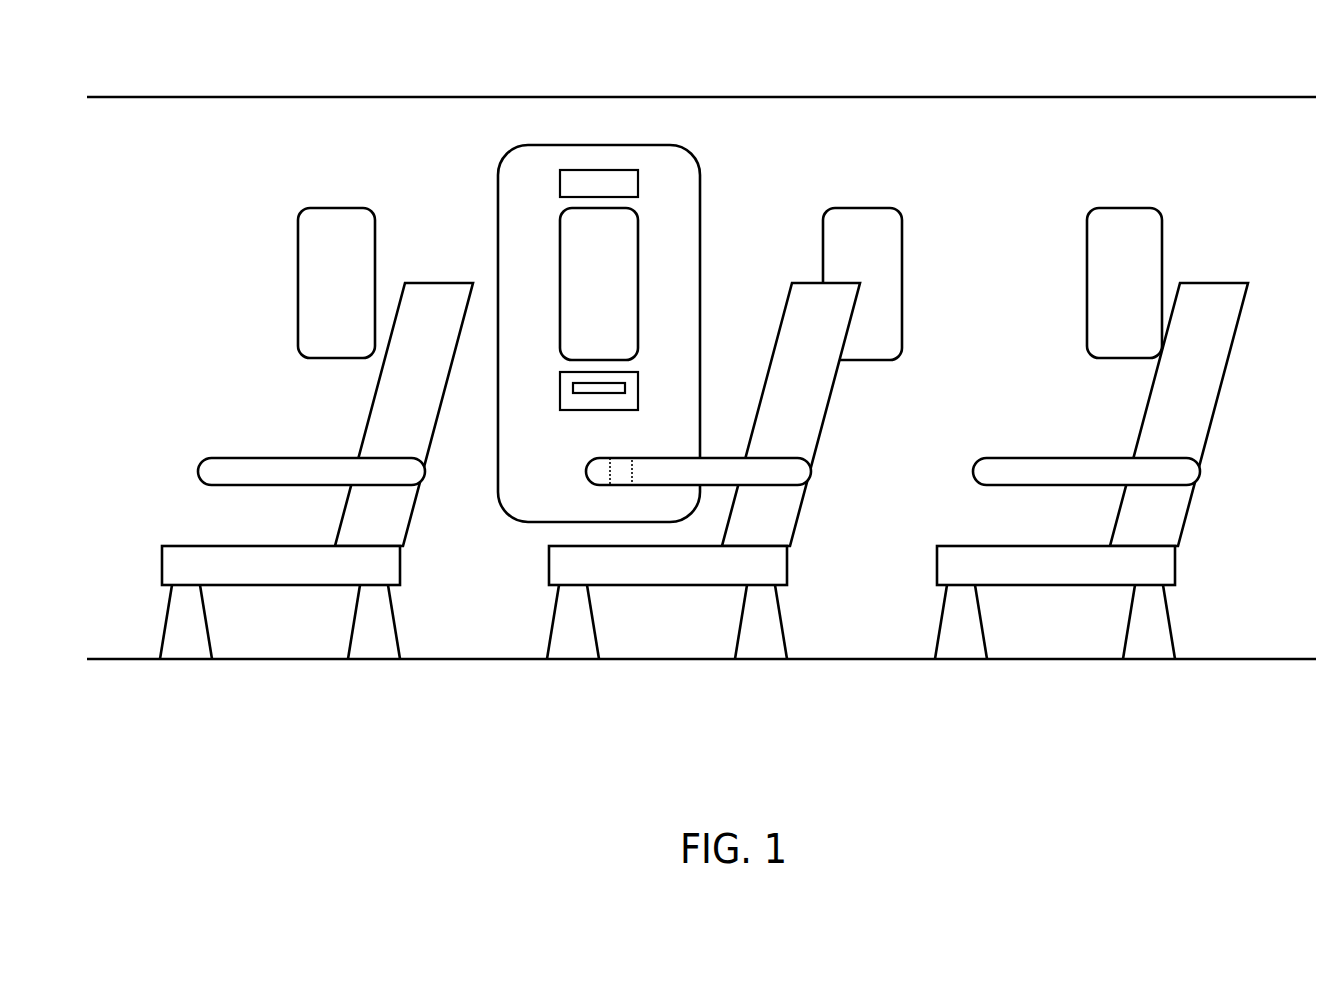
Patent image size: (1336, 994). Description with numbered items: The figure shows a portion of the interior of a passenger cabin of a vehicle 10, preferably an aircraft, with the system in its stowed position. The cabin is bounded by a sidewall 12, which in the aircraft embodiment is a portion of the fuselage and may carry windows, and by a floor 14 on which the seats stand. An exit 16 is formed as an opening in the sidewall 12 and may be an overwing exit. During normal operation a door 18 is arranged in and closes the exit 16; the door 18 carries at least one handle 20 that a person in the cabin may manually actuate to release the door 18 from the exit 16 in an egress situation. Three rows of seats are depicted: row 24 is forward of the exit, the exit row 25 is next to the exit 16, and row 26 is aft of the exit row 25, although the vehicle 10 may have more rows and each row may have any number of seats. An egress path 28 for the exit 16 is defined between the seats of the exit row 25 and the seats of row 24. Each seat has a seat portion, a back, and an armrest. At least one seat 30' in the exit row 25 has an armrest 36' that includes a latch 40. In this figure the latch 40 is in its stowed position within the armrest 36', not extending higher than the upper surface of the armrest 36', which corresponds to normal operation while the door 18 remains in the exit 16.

The vehicle 10 is at (162, 70).
The sidewall 12 is at (433, 93).
The floor 14 is at (1285, 658).
The exit 16 is at (702, 230).
The door 18 is at (677, 180).
The handle 20 is at (573, 385).
The row 24 is at (287, 722).
The exit row 25 is at (687, 723).
The row 26 is at (1074, 723).
The egress path 28 is at (475, 636).
The seat 30' is at (703, 460).
The armrest 36' is at (698, 455).
The latch 40 is at (618, 460).